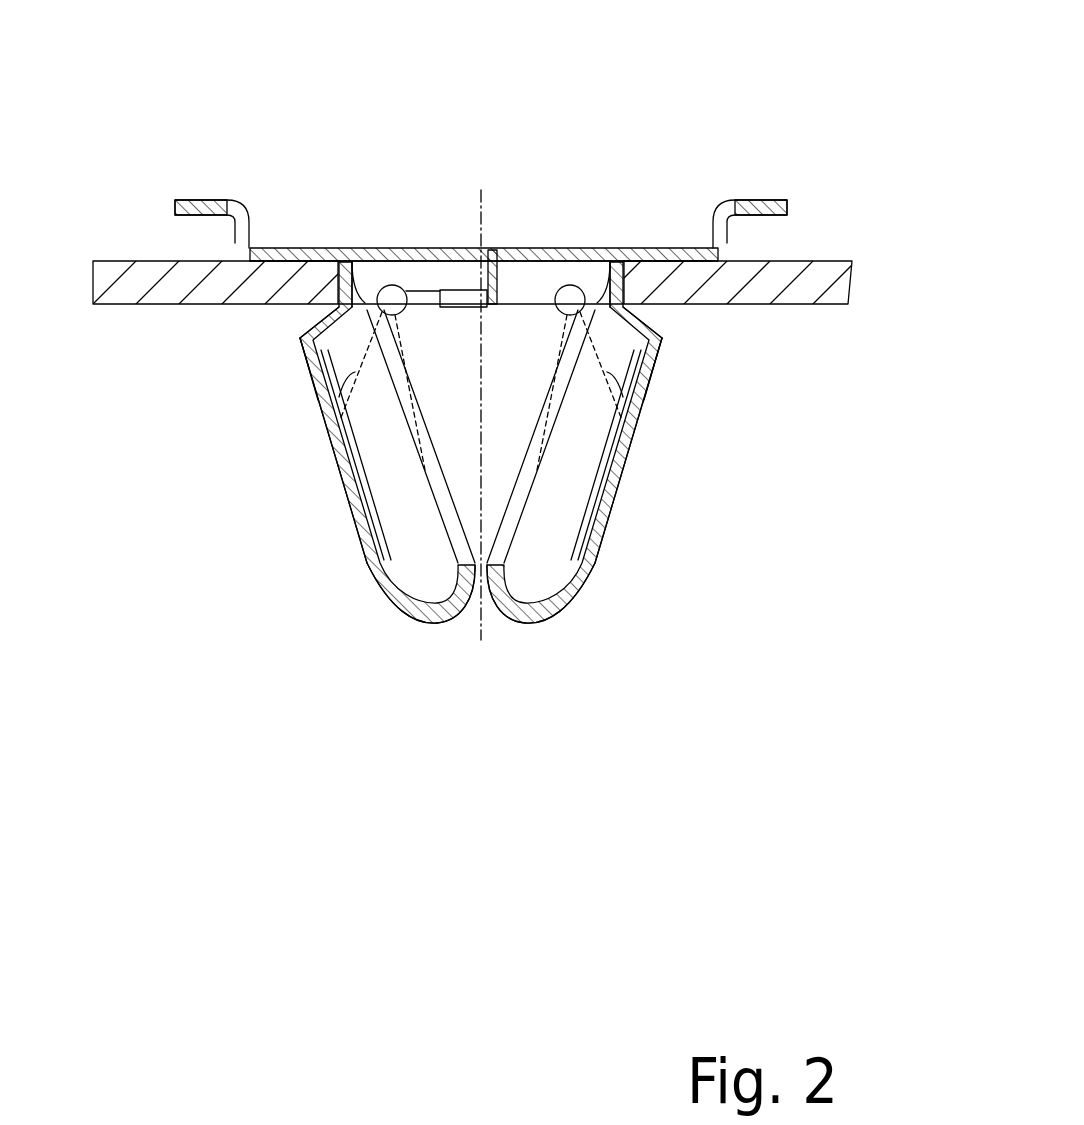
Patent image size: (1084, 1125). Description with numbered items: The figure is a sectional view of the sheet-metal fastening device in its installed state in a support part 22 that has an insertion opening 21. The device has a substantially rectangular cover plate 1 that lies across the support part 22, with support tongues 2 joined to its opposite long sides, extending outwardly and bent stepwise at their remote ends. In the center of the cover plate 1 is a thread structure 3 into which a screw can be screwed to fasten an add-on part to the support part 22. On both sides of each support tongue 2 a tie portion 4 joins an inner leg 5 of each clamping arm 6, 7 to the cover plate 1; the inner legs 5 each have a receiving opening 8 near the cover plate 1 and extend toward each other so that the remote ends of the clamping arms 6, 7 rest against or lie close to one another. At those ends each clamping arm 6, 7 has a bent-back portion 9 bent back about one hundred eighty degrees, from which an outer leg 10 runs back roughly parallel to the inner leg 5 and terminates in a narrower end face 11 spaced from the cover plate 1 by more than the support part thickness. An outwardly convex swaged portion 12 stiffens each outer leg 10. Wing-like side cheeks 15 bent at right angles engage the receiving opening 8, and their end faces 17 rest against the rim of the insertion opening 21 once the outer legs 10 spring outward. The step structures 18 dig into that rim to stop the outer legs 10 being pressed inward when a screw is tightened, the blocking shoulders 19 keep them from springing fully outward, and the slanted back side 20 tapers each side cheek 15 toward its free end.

The cover plate 1 is at (628, 248).
The support tongue 2 is at (745, 243).
The thread structure 3 is at (455, 272).
The tie portion 4 is at (383, 290).
The inner leg 5 is at (437, 520).
The clamping arm 6 is at (572, 606).
The clamping arm 7 is at (384, 589).
The receiving opening 8 is at (410, 410).
The bent-back portion 9 is at (437, 620).
The outer leg 10 is at (353, 472).
The end face 11 is at (262, 262).
The swaged portion 12 is at (353, 500).
The side cheek 15 is at (332, 387).
The end face 17 is at (296, 300).
The step structure 18 is at (322, 316).
The blocking shoulder 19 is at (388, 258).
The slanted back side 20 is at (393, 347).
The insertion opening 21 is at (527, 292).
The support part 22 is at (822, 290).